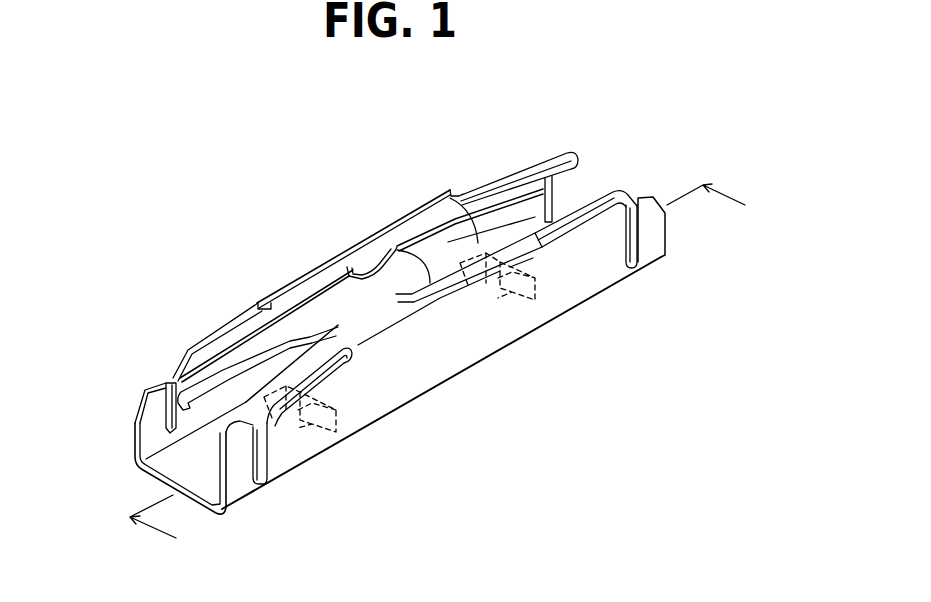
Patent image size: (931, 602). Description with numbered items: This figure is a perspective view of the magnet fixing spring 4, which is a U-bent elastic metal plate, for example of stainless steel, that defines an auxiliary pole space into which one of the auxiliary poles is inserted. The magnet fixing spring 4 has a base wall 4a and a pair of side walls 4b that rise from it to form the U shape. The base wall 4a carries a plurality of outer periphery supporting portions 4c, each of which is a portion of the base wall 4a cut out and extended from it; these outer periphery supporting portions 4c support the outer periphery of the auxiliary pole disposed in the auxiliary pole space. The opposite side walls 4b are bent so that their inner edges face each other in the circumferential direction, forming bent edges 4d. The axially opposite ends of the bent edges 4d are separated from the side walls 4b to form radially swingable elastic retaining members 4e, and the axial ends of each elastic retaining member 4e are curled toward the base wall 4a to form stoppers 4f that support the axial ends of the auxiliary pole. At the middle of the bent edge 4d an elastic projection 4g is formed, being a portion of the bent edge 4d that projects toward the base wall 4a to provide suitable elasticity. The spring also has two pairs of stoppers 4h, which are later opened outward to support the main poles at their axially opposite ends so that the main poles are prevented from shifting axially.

The magnet fixing spring 4 is at (264, 198).
The base wall 4a is at (202, 487).
The side walls 4b is at (432, 373).
The outer periphery supporting portions 4c is at (338, 425).
The bent edges 4d is at (405, 223).
The elastic retaining members 4e is at (248, 402).
The stoppers 4f is at (232, 428).
The elastic projection 4g is at (361, 265).
The stoppers 4h is at (143, 433).